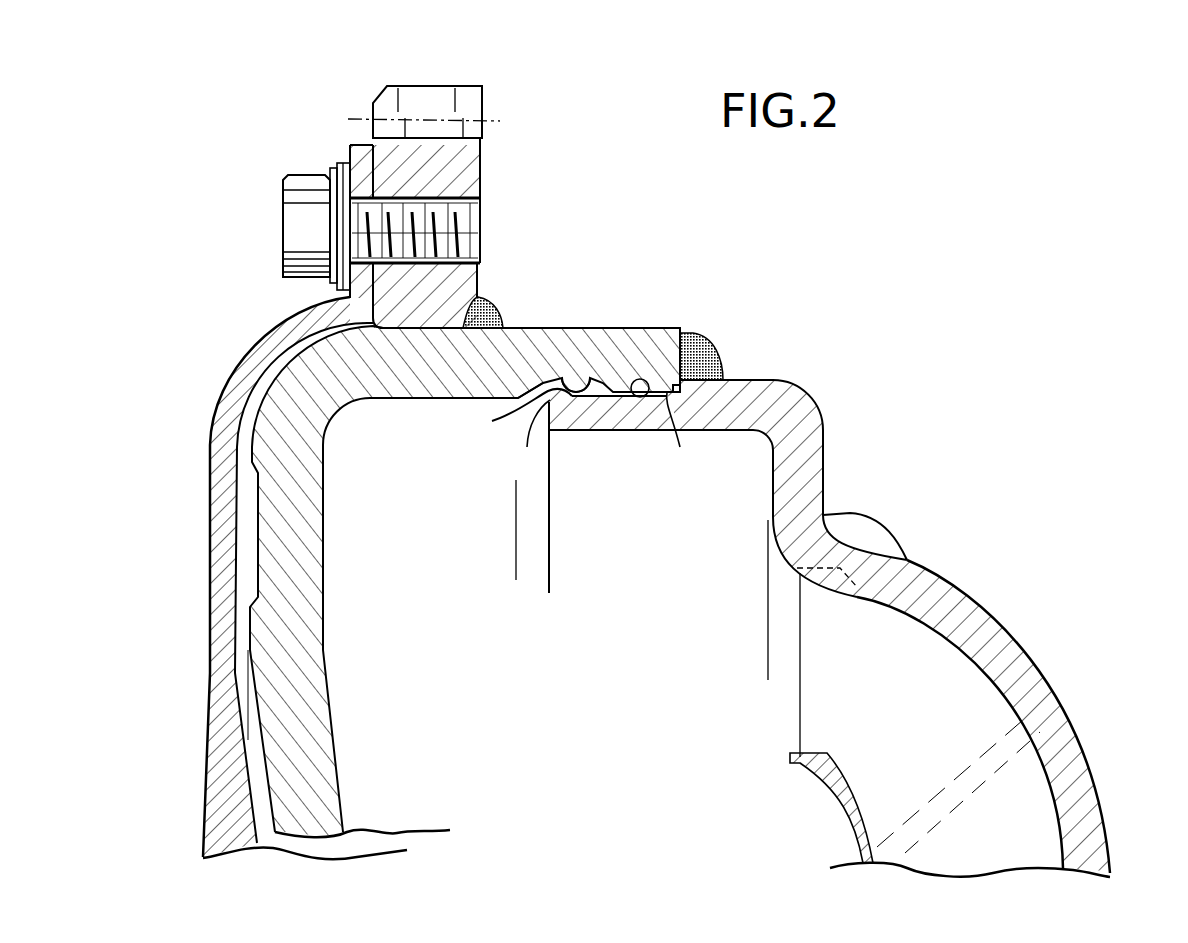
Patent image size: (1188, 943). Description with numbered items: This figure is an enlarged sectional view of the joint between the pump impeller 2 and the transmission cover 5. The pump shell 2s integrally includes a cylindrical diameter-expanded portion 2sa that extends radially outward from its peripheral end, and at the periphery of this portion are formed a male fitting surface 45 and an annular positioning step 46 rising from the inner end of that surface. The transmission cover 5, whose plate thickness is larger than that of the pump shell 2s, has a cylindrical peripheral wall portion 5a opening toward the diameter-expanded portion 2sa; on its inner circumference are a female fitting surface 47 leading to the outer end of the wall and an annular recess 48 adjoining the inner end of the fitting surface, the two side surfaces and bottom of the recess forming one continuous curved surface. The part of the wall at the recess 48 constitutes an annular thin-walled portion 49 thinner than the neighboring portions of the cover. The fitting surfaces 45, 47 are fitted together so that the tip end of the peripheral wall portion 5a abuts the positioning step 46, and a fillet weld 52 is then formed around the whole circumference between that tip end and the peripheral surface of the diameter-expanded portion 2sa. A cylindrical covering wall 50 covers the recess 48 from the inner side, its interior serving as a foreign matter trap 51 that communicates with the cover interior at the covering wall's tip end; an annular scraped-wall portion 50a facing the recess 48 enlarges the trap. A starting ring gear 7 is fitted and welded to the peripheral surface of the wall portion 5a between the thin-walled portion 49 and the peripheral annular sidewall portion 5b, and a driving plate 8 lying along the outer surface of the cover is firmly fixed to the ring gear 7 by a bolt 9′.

The pump impeller 2 is at (913, 600).
The pump shell 2s is at (1078, 764).
The cylindrical diameter-expanded portion 2sa is at (722, 393).
The transmission cover 5 is at (406, 545).
The cylindrical peripheral wall portion 5a is at (511, 350).
The peripheral annular sidewall portion 5b is at (267, 568).
The starting ring gear 7 is at (482, 110).
The driving plate 8 is at (230, 768).
The bolt 9′ is at (305, 170).
The male fitting surface 45 is at (627, 396).
The annular positioning step 46 is at (685, 437).
The female fitting surface 47 is at (658, 388).
The annular recess 48 is at (590, 383).
The annular thin-walled portion 49 is at (566, 333).
The cylindrical covering wall 50 is at (622, 491).
The annular scraped-wall portion 50a is at (577, 413).
The foreign matter trap 51 is at (520, 412).
The fillet weld 52 is at (706, 333).